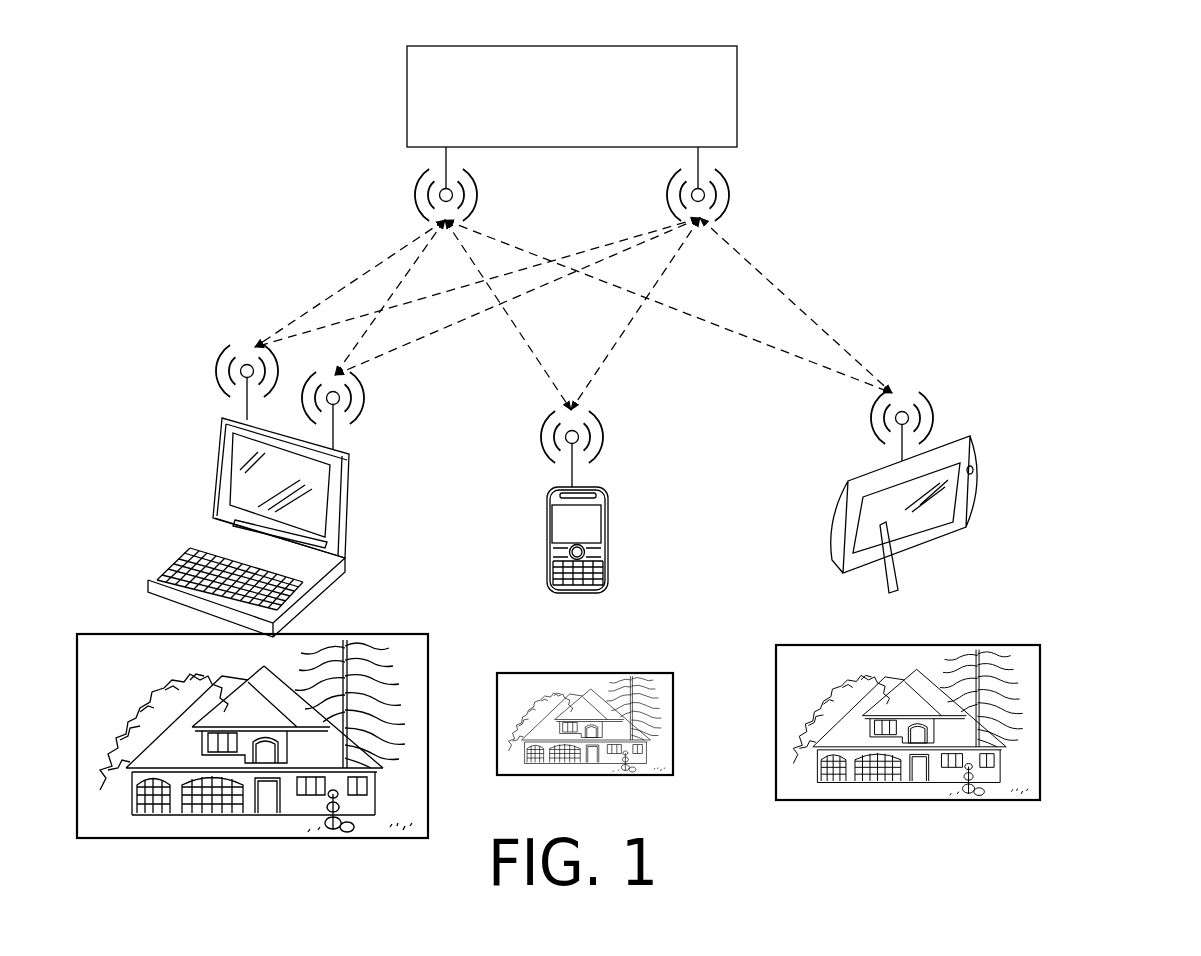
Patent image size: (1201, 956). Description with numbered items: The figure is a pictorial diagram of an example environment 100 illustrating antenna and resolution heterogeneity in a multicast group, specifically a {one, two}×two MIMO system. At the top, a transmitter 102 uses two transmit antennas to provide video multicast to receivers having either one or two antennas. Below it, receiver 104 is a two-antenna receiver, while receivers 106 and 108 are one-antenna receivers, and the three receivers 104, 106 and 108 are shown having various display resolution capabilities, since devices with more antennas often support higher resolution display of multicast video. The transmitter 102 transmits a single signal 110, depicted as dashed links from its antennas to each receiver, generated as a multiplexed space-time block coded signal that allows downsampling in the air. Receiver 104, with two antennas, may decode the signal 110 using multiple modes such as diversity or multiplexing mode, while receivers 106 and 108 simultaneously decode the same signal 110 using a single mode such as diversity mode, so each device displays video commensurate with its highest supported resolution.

The environment 100 is at (1082, 90).
The transmitter 102 is at (557, 118).
The receiver 104 is at (350, 455).
The receiver 106 is at (607, 492).
The receiver 108 is at (980, 442).
The signal 110 is at (177, 212).